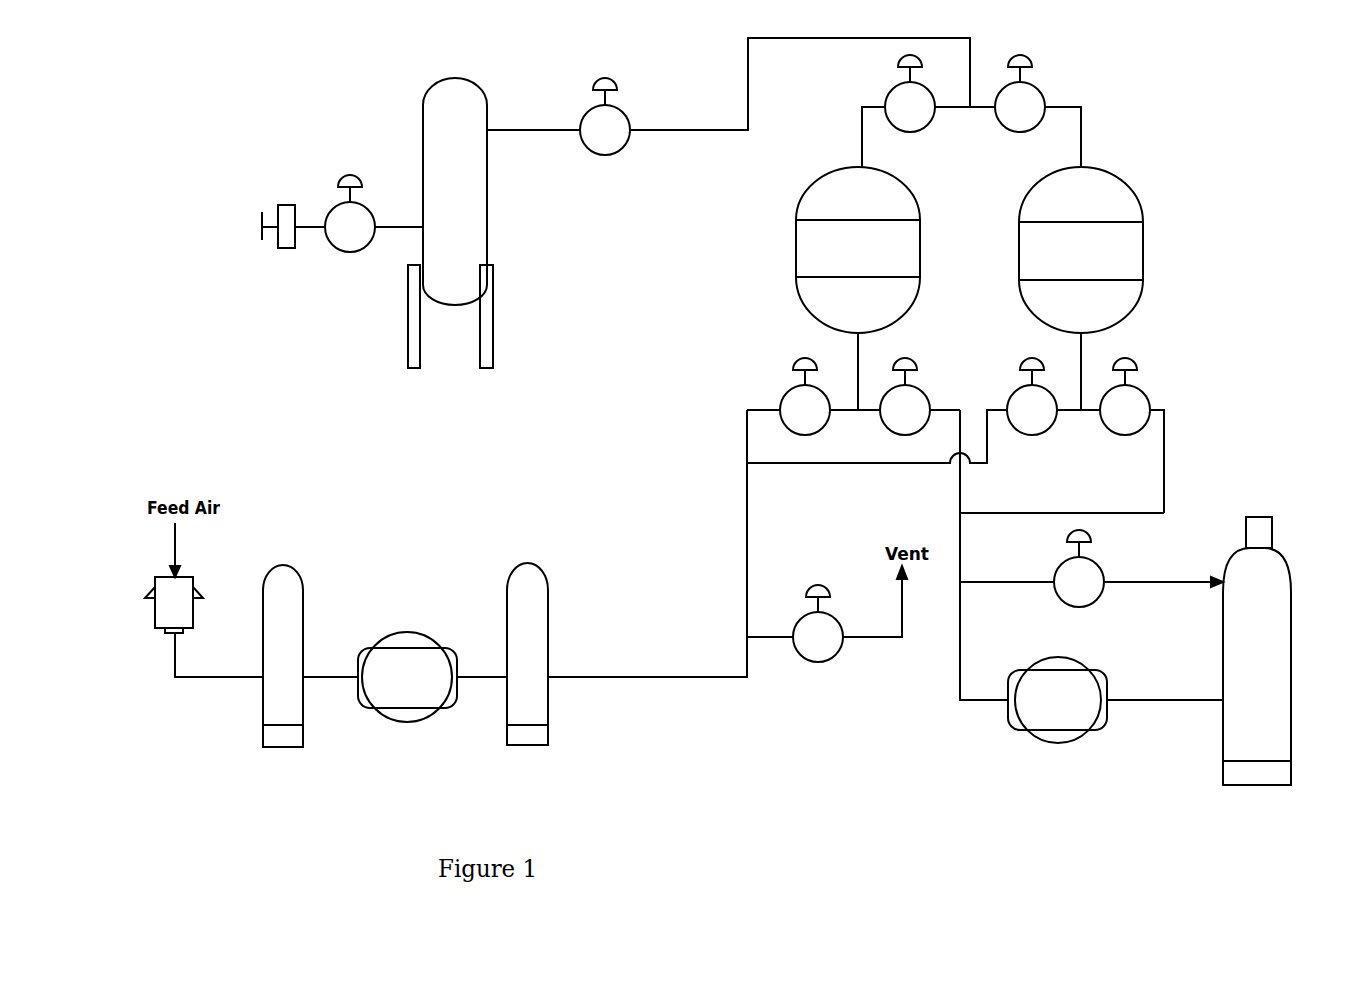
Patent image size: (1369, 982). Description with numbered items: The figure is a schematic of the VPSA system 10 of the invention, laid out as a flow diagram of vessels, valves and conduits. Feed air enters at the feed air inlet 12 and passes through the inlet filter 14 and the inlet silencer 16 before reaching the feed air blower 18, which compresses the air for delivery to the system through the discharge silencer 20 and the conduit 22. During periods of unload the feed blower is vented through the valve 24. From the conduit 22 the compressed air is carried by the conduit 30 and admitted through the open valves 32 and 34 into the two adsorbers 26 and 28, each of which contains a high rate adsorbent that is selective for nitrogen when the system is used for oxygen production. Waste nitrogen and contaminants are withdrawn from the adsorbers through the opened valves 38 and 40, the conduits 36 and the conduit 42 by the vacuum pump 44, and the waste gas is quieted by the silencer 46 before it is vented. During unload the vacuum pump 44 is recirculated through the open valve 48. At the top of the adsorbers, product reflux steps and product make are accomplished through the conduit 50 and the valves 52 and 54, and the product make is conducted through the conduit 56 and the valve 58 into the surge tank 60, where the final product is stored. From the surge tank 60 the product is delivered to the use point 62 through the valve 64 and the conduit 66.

The VPSA system 10 is at (1112, 104).
The feed air inlet 12 is at (178, 548).
The inlet filter 14 is at (163, 618).
The inlet silencer 16 is at (285, 590).
The feed air blower 18 is at (402, 620).
The discharge silencer 20 is at (528, 583).
The conduit 22 is at (612, 680).
The valve 24 is at (840, 622).
The adsorber 26 is at (832, 175).
The adsorber 28 is at (1115, 172).
The conduit 30 is at (797, 462).
The valve 32 is at (785, 398).
The valve 34 is at (1010, 396).
The conduits 36 is at (965, 530).
The valve 38 is at (926, 395).
The valve 40 is at (1147, 396).
The conduit 42 is at (958, 625).
The vacuum pump 44 is at (1095, 728).
The silencer 46 is at (1275, 695).
The valve 48 is at (1060, 556).
The conduit 50 is at (860, 142).
The valve 52 is at (890, 92).
The valve 54 is at (1040, 90).
The conduit 56 is at (745, 42).
The valve 58 is at (595, 158).
The surge tank 60 is at (470, 100).
The use point 62 is at (258, 216).
The valve 64 is at (355, 175).
The conduit 66 is at (307, 226).